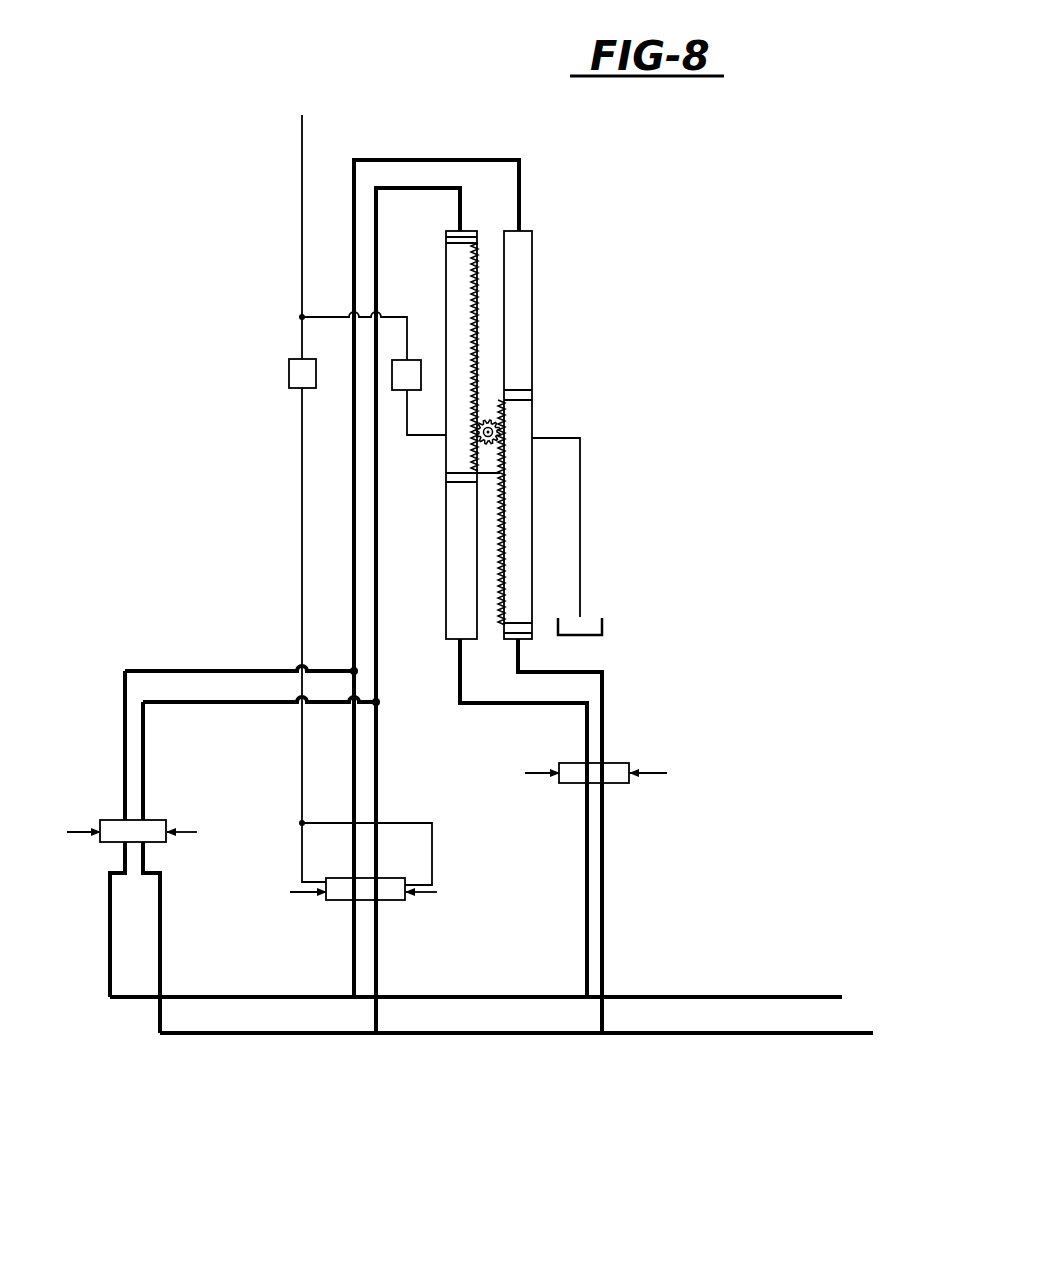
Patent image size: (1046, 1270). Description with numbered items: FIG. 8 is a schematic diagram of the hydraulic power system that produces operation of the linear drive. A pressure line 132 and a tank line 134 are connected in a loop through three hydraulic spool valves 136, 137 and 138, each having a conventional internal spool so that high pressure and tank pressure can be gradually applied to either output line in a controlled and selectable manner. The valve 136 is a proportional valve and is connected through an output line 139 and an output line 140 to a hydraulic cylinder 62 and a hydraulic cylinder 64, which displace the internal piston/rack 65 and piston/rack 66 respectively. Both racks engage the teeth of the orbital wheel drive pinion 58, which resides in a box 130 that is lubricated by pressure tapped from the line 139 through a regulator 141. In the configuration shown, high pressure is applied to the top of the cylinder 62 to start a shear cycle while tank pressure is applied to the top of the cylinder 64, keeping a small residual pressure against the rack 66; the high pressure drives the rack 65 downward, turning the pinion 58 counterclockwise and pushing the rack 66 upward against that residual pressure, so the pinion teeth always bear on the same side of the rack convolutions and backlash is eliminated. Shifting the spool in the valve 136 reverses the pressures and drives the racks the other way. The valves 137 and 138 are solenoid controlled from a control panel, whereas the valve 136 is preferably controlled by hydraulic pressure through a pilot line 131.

The orbital wheel drive pinion 58 is at (500, 408).
The hydraulic cylinder 62 is at (446, 277).
The hydraulic cylinder 64 is at (532, 297).
The piston/rack 65 is at (476, 357).
The piston/rack 66 is at (503, 533).
The box 130 is at (487, 475).
The pilot line 131 is at (302, 293).
The pressure line 132 is at (740, 997).
The tank line 134 is at (780, 1035).
The proportional valve 136 is at (405, 898).
The hydraulic spool valve 137 is at (100, 826).
The hydraulic spool valve 138 is at (629, 780).
The output line 139 is at (413, 158).
The output line 140 is at (450, 187).
The regulator 141 is at (392, 373).